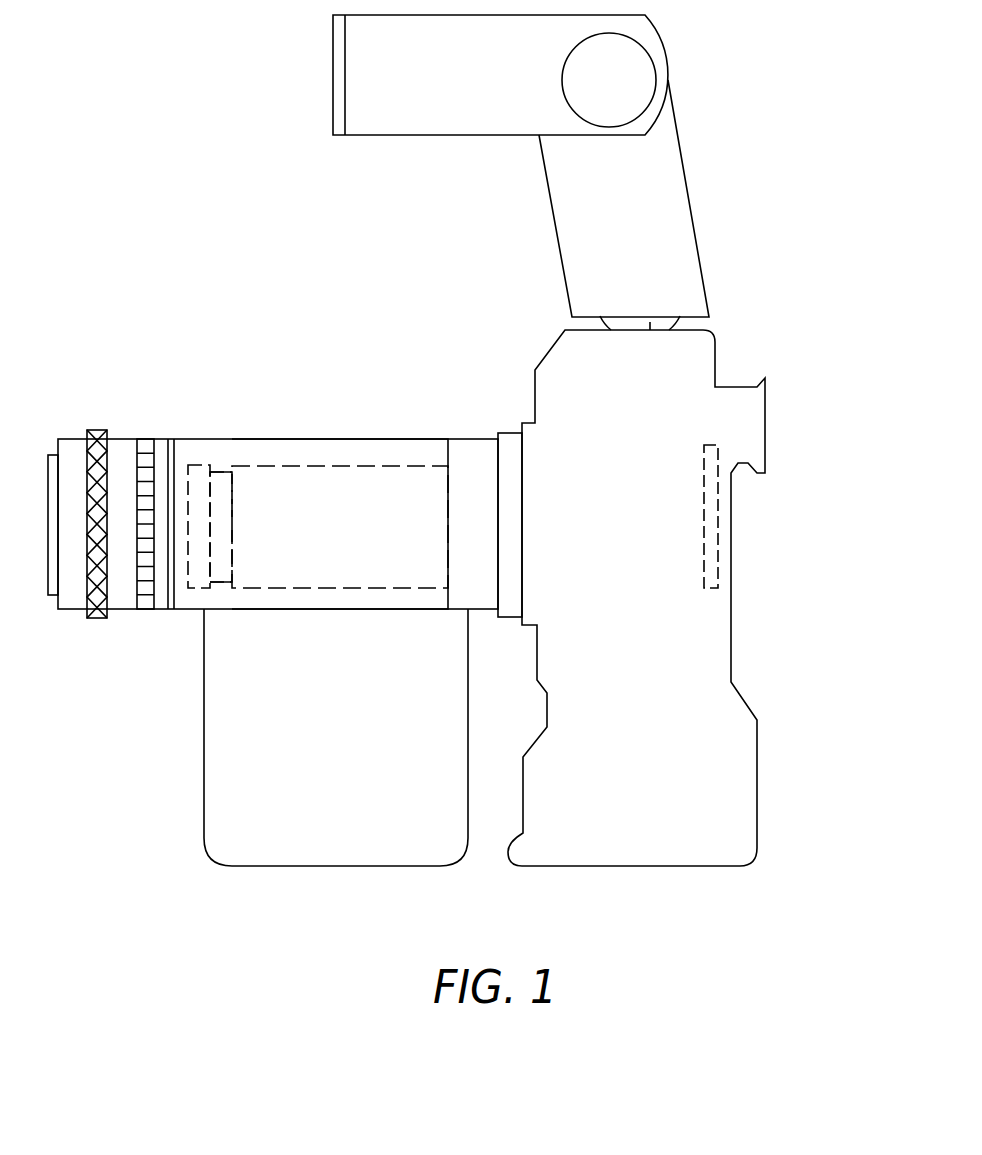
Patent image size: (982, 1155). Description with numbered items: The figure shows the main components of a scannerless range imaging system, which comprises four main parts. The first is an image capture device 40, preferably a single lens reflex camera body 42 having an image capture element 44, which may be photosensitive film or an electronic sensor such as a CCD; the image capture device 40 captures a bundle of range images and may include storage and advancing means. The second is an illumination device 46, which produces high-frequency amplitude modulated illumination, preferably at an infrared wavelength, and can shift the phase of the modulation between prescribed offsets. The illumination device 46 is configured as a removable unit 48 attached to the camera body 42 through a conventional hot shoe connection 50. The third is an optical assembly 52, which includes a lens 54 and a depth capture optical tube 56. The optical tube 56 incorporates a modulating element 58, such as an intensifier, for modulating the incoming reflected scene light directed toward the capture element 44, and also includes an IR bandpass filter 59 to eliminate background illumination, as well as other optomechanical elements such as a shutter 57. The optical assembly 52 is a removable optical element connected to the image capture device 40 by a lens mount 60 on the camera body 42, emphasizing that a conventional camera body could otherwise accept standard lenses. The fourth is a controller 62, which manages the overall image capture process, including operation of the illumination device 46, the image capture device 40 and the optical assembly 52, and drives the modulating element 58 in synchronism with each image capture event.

The image capture device 40 is at (686, 598).
The camera body 42 is at (795, 594).
The image capture element 44 is at (720, 530).
The illumination device 46 is at (578, 181).
The removable unit 48 is at (680, 238).
The hot shoe connection 50 is at (650, 322).
The optical assembly 52 is at (266, 510).
The lens 54 is at (108, 640).
The depth capture optical tube 56 is at (307, 416).
The shutter 57 is at (200, 465).
The modulating element 58 is at (342, 465).
The IR bandpass filter 59 is at (225, 472).
The lens mount 60 is at (510, 620).
The controller 62 is at (237, 763).